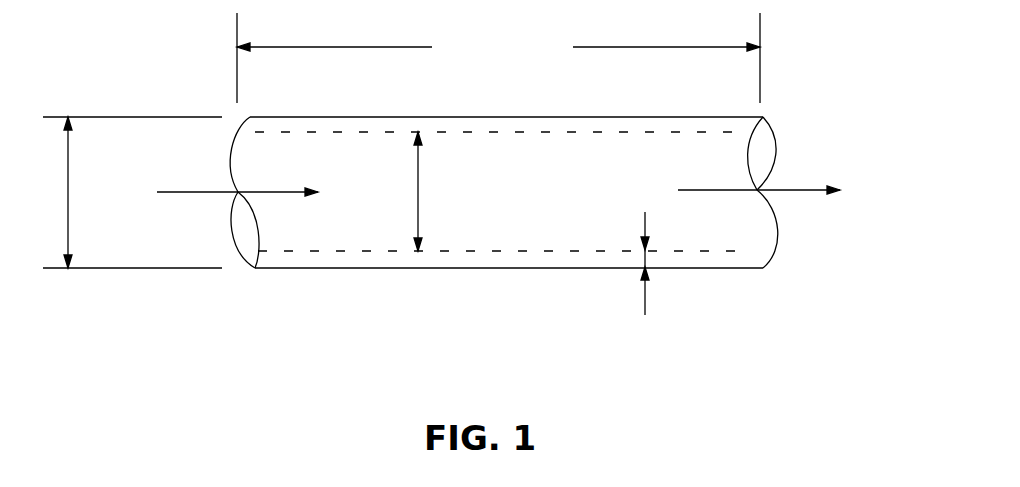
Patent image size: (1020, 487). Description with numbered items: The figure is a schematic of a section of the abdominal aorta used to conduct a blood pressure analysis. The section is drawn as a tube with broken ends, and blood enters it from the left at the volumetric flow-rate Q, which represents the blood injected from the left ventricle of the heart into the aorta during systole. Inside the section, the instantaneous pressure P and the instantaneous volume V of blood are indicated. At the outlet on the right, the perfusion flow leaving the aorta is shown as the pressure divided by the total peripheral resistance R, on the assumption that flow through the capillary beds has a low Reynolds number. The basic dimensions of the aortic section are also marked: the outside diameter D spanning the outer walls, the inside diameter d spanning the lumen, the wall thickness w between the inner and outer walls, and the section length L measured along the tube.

The instantaneous pressure P is at (504, 192).
The instantaneous volume V is at (625, 191).
The outside diameter D is at (122, 192).
The inside diameter d is at (399, 191).
The section length L is at (498, 58).
The volumetric flow-rate Q is at (219, 192).
The wall thickness w is at (662, 274).
The total peripheral resistance R is at (893, 195).